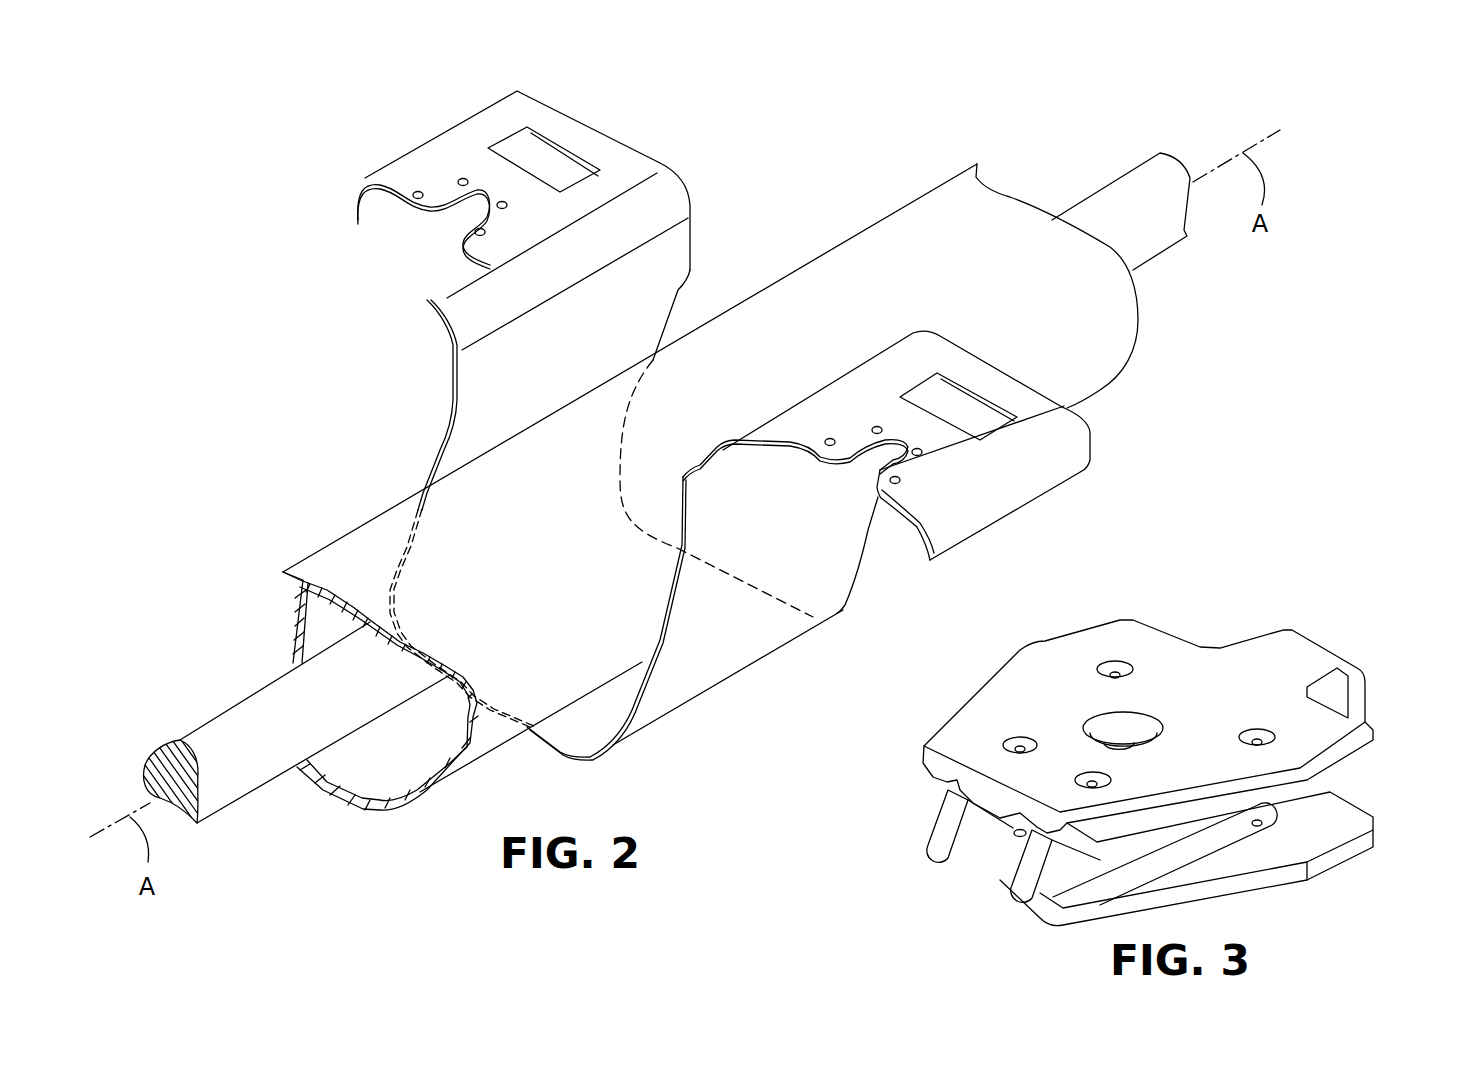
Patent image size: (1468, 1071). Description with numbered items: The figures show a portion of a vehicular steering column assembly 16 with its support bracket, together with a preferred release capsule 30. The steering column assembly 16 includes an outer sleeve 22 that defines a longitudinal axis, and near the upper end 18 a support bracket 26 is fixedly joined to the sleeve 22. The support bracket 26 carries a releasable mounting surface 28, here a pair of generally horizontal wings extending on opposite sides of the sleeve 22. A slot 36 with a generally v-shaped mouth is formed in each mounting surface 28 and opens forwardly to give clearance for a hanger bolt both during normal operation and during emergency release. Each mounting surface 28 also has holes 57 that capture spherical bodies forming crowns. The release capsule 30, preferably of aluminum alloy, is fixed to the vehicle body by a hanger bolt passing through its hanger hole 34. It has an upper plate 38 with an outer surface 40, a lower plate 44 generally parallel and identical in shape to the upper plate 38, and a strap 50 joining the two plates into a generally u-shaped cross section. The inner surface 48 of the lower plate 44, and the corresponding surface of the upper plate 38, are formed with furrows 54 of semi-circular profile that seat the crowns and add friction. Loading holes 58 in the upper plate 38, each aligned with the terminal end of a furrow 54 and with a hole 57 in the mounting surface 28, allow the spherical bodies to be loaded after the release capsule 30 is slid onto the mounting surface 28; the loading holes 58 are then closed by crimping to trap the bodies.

In FIG. 2, the steering column assembly 16 is at (266, 435).
In FIG. 2, the upper end 18 is at (333, 557).
In FIG. 2, the outer sleeve 22 is at (845, 253).
In FIG. 2, the support bracket 26 is at (705, 705).
In FIG. 2, the mounting surface 28 is at (477, 143).
In FIG. 2, the slot 36 is at (437, 203).
In FIG. 2, the hole 57 is at (500, 203).
In FIG. 3, the release capsule 30 is at (1337, 645).
In FIG. 3, the hanger hole 34 is at (1093, 728).
In FIG. 3, the upper plate 38 is at (1140, 620).
In FIG. 3, the outer surface 40 is at (1022, 685).
In FIG. 3, the lower plate 44 is at (1367, 840).
In FIG. 3, the inner surface 48 is at (1353, 803).
In FIG. 3, the strap 50 is at (1367, 680).
In FIG. 3, the furrow 54 is at (968, 850).
In FIG. 3, the loading hole 58 is at (1118, 664).